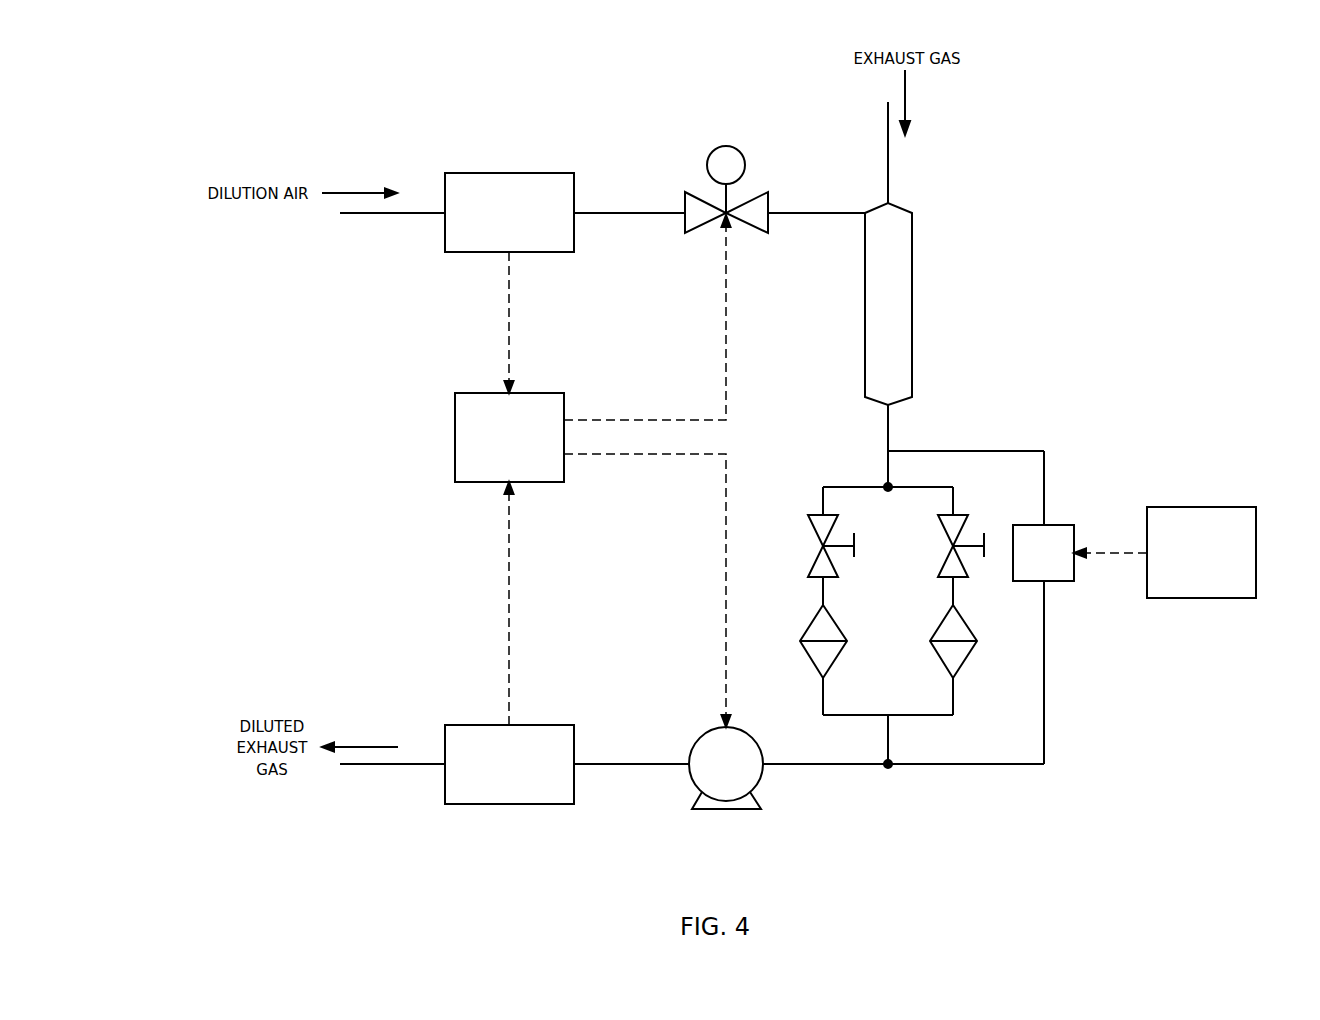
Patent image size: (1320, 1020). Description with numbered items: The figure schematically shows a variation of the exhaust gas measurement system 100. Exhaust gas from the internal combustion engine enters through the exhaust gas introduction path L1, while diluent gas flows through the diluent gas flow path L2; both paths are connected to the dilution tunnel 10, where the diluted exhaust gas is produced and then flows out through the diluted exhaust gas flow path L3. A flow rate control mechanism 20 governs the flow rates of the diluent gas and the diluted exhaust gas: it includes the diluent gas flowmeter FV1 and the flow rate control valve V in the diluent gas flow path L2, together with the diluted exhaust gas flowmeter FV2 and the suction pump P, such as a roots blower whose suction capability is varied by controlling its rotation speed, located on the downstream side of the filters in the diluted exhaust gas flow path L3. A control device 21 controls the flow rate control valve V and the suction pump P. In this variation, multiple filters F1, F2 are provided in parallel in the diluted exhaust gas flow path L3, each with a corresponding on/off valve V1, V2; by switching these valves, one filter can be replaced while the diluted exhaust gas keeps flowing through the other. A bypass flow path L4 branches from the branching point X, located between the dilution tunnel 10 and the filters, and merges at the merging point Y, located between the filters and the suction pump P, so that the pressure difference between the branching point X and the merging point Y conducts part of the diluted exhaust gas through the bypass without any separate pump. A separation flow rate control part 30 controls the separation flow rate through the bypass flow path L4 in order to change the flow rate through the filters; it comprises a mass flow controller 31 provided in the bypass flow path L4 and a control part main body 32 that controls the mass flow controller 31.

The exhaust gas measurement system 100 is at (266, 102).
The dilution tunnel 10 is at (912, 247).
The flow rate control mechanism 20 is at (365, 354).
The control device 21 is at (455, 438).
The separation flow rate control part 30 is at (1234, 429).
The mass flow controller 31 is at (1060, 525).
The control part main body 32 is at (1200, 507).
The diluent gas flowmeter FV1 is at (510, 173).
The diluted exhaust gas flowmeter FV2 is at (510, 804).
The flow rate control valve V is at (727, 145).
The on/off valve V1 is at (812, 530).
The on/off valve V2 is at (940, 530).
The filter F1 is at (802, 633).
The filter F2 is at (932, 633).
The suction pump P is at (726, 812).
The exhaust gas introduction path L1 is at (888, 160).
The diluent gas flow path L2 is at (630, 212).
The diluted exhaust gas flow path L3 is at (890, 430).
The bypass flow path L4 is at (1045, 750).
The branching point X is at (886, 485).
The merging point Y is at (885, 763).